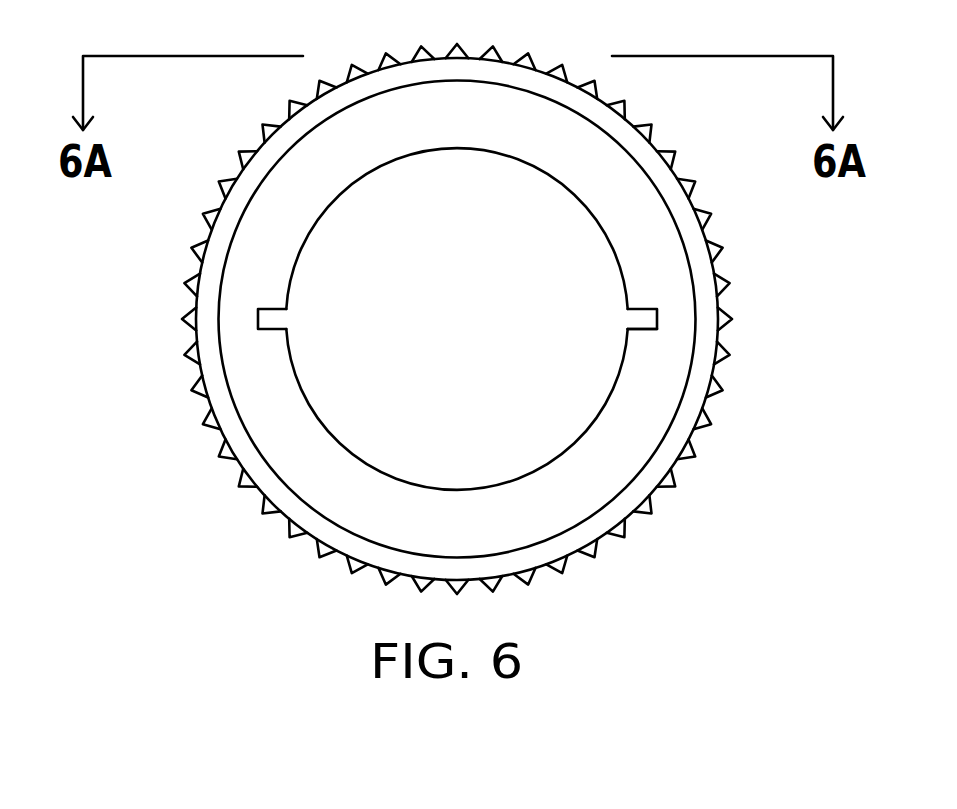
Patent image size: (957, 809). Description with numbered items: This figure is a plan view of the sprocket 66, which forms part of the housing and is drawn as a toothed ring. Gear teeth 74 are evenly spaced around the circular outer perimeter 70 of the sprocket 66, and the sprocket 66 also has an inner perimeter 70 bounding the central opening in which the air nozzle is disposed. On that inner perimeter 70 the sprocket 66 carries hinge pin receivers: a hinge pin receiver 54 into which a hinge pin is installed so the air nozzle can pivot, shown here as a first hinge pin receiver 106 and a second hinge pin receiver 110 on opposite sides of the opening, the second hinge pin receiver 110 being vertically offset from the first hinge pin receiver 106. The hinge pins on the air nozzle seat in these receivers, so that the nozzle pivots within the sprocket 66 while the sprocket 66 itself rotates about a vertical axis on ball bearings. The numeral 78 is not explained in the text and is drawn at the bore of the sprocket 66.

The hinge pin receiver 54 is at (653, 305).
The sprocket 66 is at (573, 552).
The circular outer perimeter 70 is at (717, 373).
The gear teeth 74 is at (673, 170).
The central bore 78 is at (293, 372).
The first hinge pin receiver 106 is at (643, 333).
The second hinge pin receiver 110 is at (270, 308).